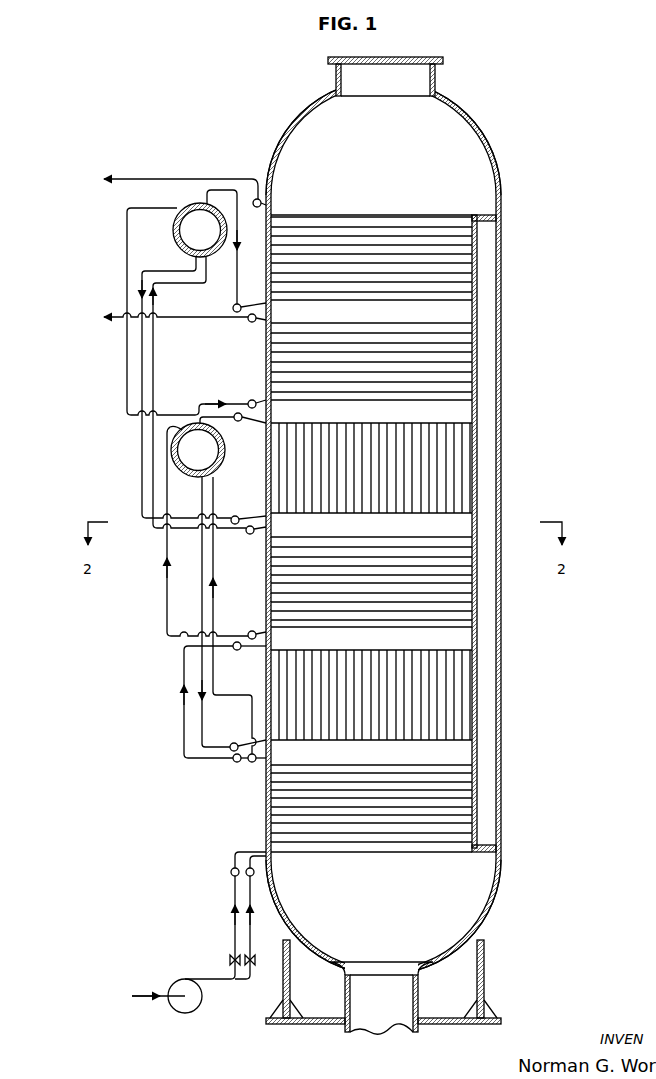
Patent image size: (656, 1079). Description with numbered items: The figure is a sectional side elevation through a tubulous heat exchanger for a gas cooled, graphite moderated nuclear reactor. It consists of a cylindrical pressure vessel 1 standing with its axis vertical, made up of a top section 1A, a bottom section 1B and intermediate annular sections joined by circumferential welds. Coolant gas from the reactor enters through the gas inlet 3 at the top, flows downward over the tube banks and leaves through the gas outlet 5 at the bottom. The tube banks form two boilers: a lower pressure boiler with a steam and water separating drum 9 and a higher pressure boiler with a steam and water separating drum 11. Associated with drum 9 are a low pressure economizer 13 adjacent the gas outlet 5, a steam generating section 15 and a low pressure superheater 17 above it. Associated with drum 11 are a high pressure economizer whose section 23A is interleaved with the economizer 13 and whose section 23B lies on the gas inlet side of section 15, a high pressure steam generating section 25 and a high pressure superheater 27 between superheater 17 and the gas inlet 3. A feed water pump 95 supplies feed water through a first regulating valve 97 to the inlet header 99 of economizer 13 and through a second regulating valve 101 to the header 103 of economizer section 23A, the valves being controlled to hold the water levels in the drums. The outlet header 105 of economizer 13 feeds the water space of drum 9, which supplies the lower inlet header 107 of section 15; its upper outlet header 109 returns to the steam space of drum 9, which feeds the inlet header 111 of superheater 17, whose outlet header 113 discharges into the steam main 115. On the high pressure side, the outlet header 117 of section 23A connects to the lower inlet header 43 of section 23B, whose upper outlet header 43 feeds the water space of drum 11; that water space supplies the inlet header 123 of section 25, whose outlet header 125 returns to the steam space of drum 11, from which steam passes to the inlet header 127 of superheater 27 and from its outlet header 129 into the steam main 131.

The cylindrical pressure vessel 1 is at (501, 670).
The top section 1A is at (470, 122).
The bottom section 1B is at (425, 975).
The gas inlet 3 is at (437, 78).
The gas outlet 5 is at (362, 1030).
The steam and water separating drum 9 is at (221, 462).
The steam and water separating drum 11 is at (194, 207).
The low pressure economizer 13 is at (462, 790).
The steam generating section 15 is at (458, 698).
The low pressure superheater 17 is at (462, 378).
The high pressure economizer section 23A is at (462, 825).
The high pressure economizer section 23B is at (453, 600).
The high pressure steam generating section 25 is at (462, 490).
The high pressure superheater 27 is at (462, 283).
The inlet and outlet headers 43 is at (249, 534).
The feed water pump 95 is at (200, 1006).
The first regulating valve 97 is at (255, 962).
The inlet header 99 is at (254, 872).
The second regulating valve 101 is at (230, 958).
The outlet header 103 is at (231, 872).
The outlet header 105 is at (256, 757).
The inlet header 107 is at (233, 743).
The outlet header 109 is at (237, 650).
The inlet header 111 is at (250, 400).
The outlet header 113 is at (252, 322).
The steam main 115 is at (103, 321).
The outlet header 117 is at (234, 762).
The inlet header 123 is at (235, 516).
The outlet header 125 is at (238, 421).
The inlet header 127 is at (233, 308).
The outlet header 129 is at (262, 202).
The steam main 131 is at (127, 178).